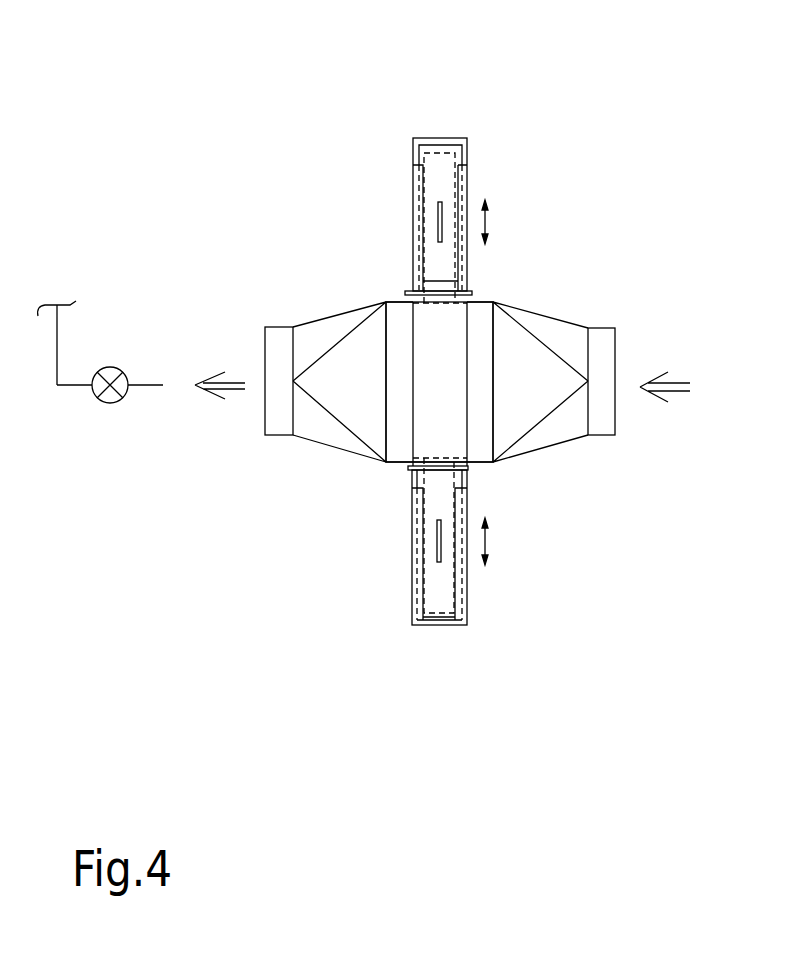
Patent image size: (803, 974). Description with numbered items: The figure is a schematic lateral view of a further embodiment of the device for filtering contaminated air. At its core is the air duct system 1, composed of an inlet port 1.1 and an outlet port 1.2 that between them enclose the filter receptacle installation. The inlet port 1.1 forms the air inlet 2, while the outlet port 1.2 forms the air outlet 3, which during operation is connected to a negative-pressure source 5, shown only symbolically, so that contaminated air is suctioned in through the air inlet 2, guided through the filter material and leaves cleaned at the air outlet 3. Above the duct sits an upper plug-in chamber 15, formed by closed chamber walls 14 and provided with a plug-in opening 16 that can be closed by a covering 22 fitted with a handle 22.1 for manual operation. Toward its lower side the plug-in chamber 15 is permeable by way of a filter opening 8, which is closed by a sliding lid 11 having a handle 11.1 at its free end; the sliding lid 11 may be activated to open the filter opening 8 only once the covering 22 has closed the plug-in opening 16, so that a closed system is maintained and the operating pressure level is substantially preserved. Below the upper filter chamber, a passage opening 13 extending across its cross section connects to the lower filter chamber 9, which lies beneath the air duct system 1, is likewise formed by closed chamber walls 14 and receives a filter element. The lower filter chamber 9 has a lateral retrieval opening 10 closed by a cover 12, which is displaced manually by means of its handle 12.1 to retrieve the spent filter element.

The air duct system 1 is at (183, 583).
The inlet port 1.1 is at (518, 397).
The outlet port 1.2 is at (346, 383).
The air inlet 2 is at (615, 340).
The air outlet 3 is at (265, 340).
The negative-pressure source 5 is at (112, 398).
The filter opening 8 is at (433, 303).
The lower filter chamber 9 is at (467, 587).
The retrieval opening 10 is at (430, 498).
The sliding lid 11 is at (470, 293).
The handle 11.1 is at (437, 282).
The cover 12 is at (442, 605).
The handle 12.1 is at (437, 543).
The passage opening 13 is at (455, 464).
The closed chamber walls 14 is at (468, 165).
The upper plug-in chamber 15 is at (467, 190).
The plug-in opening 16 is at (457, 173).
The covering 22 is at (435, 180).
The handle 22.1 is at (442, 216).